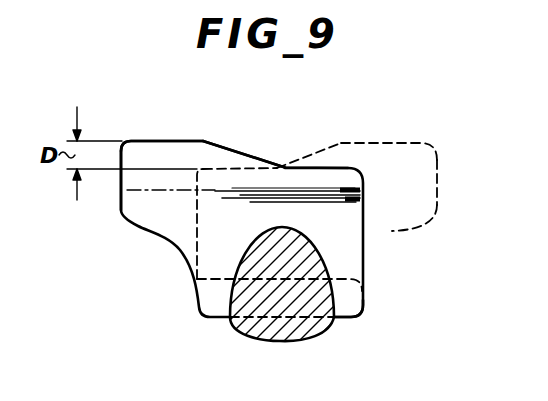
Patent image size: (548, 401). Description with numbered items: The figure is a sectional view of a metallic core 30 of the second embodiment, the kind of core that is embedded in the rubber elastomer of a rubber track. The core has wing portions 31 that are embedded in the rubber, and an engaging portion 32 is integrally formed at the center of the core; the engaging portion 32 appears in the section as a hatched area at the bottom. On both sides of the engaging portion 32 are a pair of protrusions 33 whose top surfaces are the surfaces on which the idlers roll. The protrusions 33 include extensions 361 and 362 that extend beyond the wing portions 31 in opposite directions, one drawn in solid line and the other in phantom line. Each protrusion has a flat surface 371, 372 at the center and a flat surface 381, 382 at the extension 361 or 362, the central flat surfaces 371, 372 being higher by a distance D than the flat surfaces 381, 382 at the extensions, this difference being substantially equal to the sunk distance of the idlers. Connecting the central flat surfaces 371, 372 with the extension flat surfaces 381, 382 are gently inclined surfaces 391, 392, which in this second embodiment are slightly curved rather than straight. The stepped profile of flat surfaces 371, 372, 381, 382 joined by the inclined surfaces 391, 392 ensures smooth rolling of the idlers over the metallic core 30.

The metallic core 30 is at (218, 327).
The wing portions 31 is at (353, 304).
The engaging portion 32 is at (285, 335).
The protrusions 33 is at (351, 257).
The extension 361 is at (121, 198).
The extension 362 is at (437, 178).
The flat surface 371 is at (317, 167).
The flat surface 372 is at (220, 167).
The flat surface 381 is at (144, 140).
The flat surface 382 is at (407, 143).
The inclined surface 391 is at (238, 148).
The inclined surface 392 is at (340, 145).